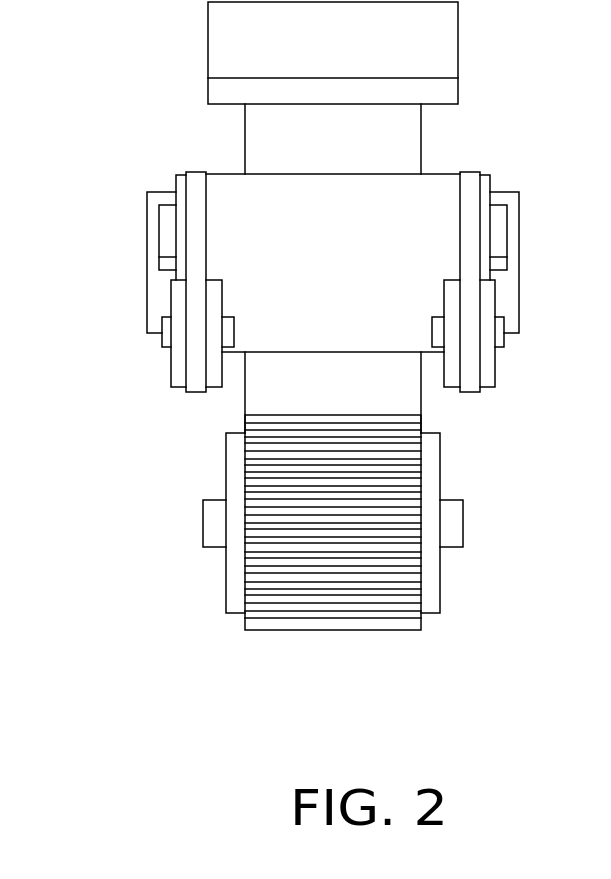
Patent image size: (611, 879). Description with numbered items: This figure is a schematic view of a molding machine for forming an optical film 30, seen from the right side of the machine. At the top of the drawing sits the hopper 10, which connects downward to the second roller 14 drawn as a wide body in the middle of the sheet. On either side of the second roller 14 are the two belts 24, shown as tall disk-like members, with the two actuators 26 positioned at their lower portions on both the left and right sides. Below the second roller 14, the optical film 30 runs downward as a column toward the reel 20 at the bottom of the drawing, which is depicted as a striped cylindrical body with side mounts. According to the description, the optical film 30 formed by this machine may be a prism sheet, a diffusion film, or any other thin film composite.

The hopper 10 is at (229, 53).
The second roller 14 is at (438, 192).
The belts 24 is at (197, 188).
The actuators 26 is at (178, 370).
The optical film 30 is at (388, 390).
The reel 20 is at (430, 593).